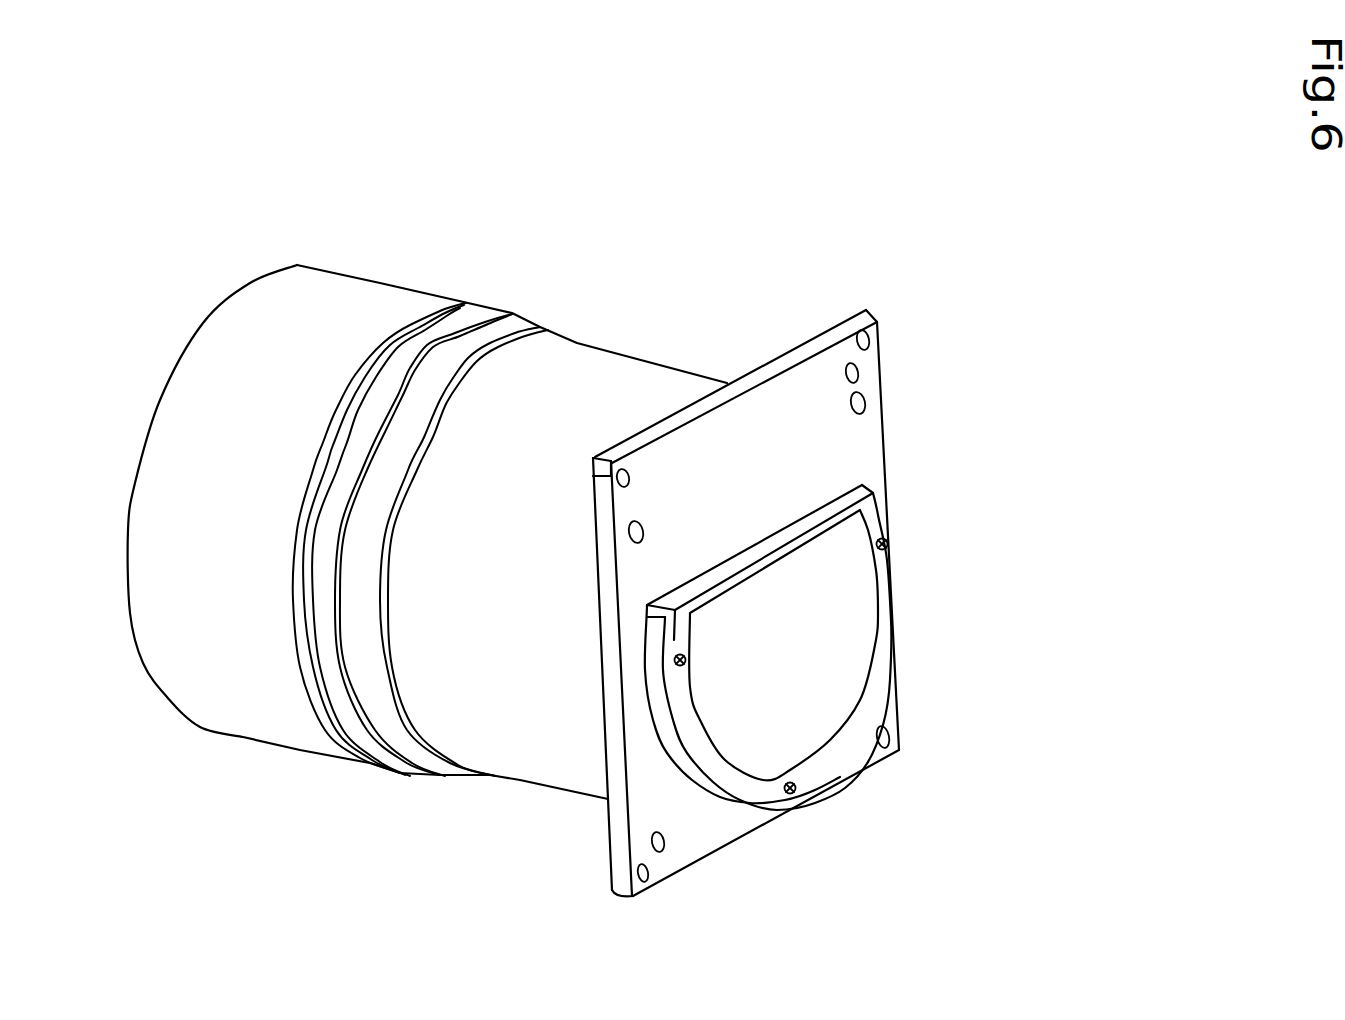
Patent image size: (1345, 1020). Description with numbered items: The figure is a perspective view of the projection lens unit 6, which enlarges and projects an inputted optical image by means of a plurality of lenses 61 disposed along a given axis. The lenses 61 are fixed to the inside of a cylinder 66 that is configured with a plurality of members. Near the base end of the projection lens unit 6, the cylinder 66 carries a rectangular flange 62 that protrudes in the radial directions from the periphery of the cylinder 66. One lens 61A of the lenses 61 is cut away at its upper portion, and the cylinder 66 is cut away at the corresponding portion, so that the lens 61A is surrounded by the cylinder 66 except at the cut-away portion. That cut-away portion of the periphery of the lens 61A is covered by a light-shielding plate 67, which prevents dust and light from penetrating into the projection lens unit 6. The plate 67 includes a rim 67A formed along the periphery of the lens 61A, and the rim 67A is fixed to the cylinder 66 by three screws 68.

The projection lens unit 6 is at (398, 298).
The cylinder 66 is at (617, 365).
The flange 62 is at (780, 356).
The light-shielding plate 67 is at (861, 612).
The rim 67A is at (894, 613).
The lenses 61 is at (883, 645).
The lens 61A is at (838, 647).
The screws 68 is at (888, 545).